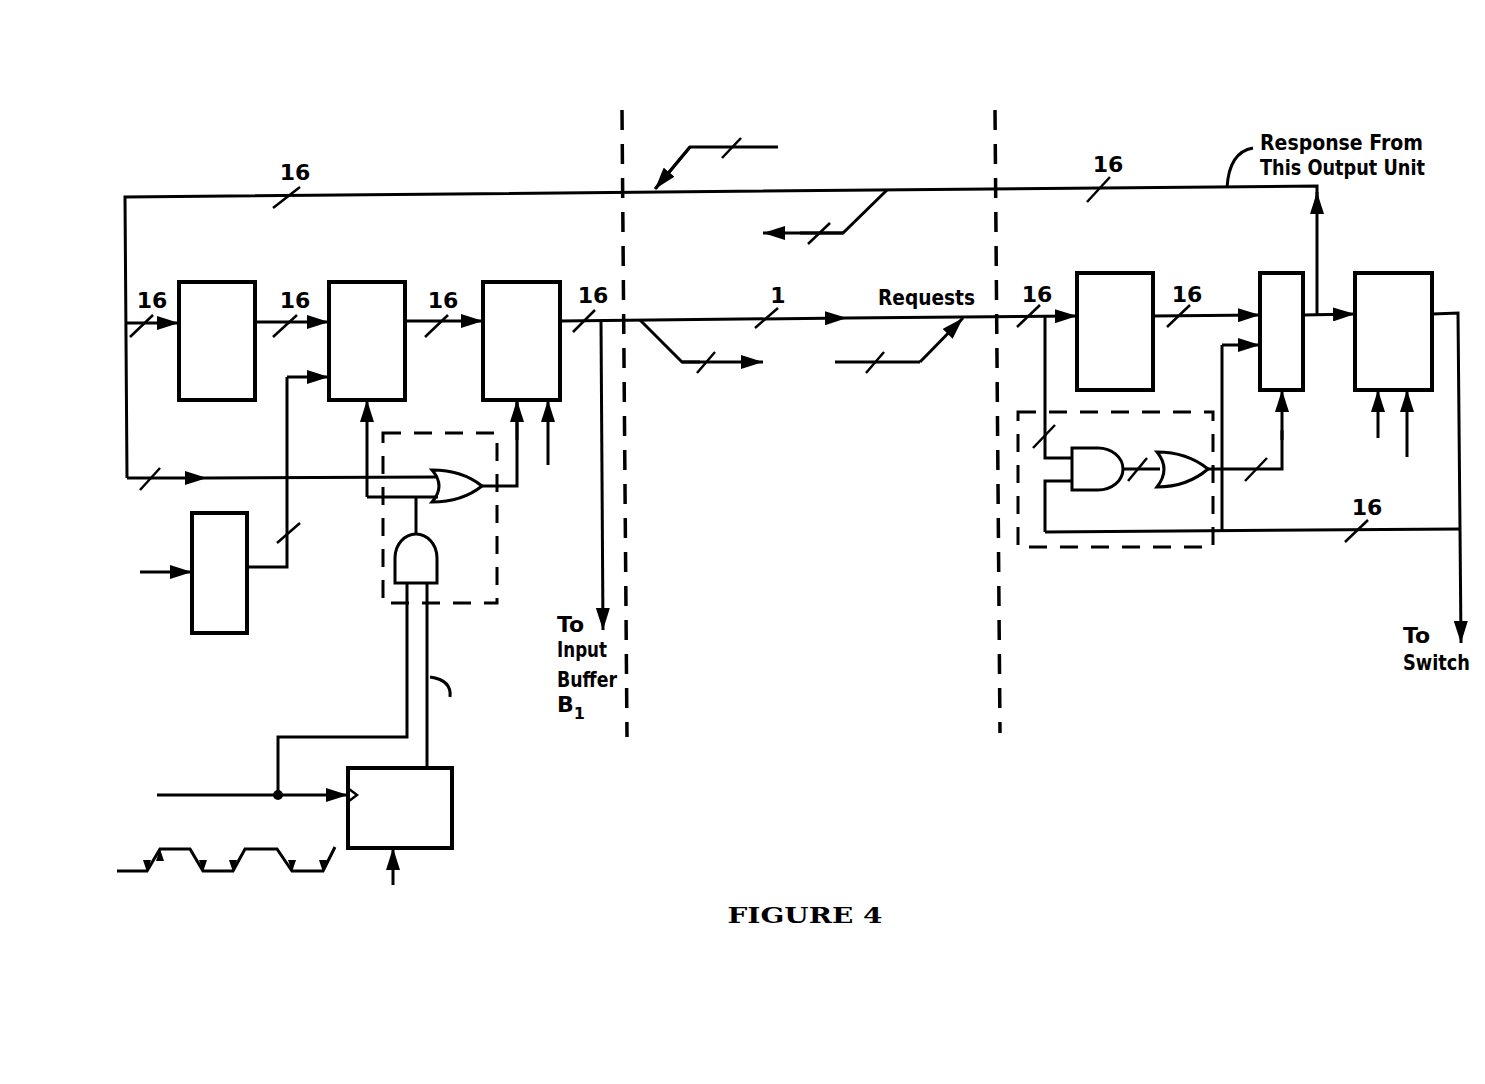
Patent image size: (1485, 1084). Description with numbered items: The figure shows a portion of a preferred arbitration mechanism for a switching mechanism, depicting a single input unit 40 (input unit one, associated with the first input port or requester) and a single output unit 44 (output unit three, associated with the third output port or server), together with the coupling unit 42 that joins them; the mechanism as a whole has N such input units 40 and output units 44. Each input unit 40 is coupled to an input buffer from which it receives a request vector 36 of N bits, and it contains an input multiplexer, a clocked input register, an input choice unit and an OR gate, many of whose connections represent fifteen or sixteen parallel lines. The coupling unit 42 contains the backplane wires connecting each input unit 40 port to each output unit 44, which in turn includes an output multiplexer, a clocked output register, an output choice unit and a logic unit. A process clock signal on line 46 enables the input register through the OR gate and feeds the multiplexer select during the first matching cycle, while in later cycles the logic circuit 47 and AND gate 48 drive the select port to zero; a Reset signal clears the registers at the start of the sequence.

The input unit 40 is at (490, 155).
The coupling unit 42 is at (820, 582).
The output unit 44 is at (1200, 575).
The request vector 36 is at (229, 621).
The clock signal line 46 is at (197, 795).
The logic circuit 47 is at (434, 840).
The AND gate 48 is at (357, 646).